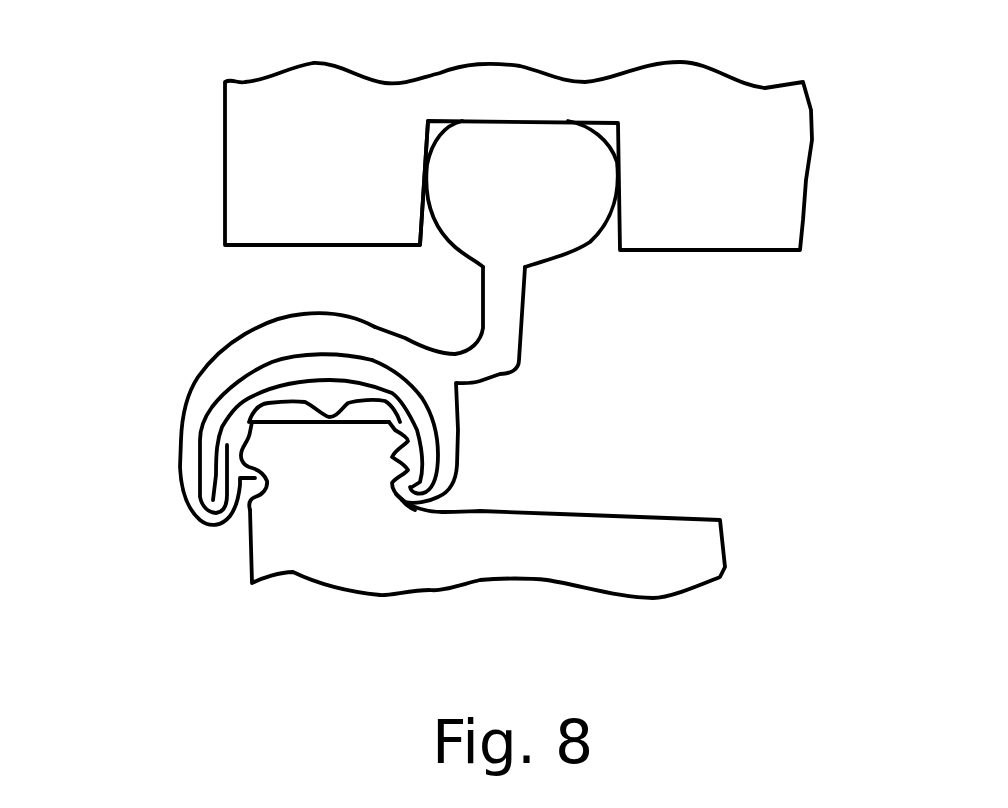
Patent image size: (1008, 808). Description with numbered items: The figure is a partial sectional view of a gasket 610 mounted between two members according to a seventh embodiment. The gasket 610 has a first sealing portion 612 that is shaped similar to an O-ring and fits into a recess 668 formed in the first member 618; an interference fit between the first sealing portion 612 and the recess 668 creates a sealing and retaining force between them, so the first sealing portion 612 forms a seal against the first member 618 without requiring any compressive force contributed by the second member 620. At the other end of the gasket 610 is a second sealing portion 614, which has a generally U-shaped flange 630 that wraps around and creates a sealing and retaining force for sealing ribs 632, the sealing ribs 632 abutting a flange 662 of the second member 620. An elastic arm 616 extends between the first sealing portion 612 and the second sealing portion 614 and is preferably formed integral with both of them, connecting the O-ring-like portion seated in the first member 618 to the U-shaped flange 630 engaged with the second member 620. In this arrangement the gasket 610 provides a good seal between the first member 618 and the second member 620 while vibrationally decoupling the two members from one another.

The gasket 610 is at (410, 323).
The first sealing portion 612 is at (592, 275).
The second sealing portion 614 is at (406, 541).
The elastic arm 616 is at (515, 360).
The first member 618 is at (710, 65).
The second member 620 is at (480, 590).
The U-shaped flange 630 is at (237, 380).
The sealing ribs 632 is at (258, 476).
The flange 662 is at (430, 503).
The recess 668 is at (420, 242).